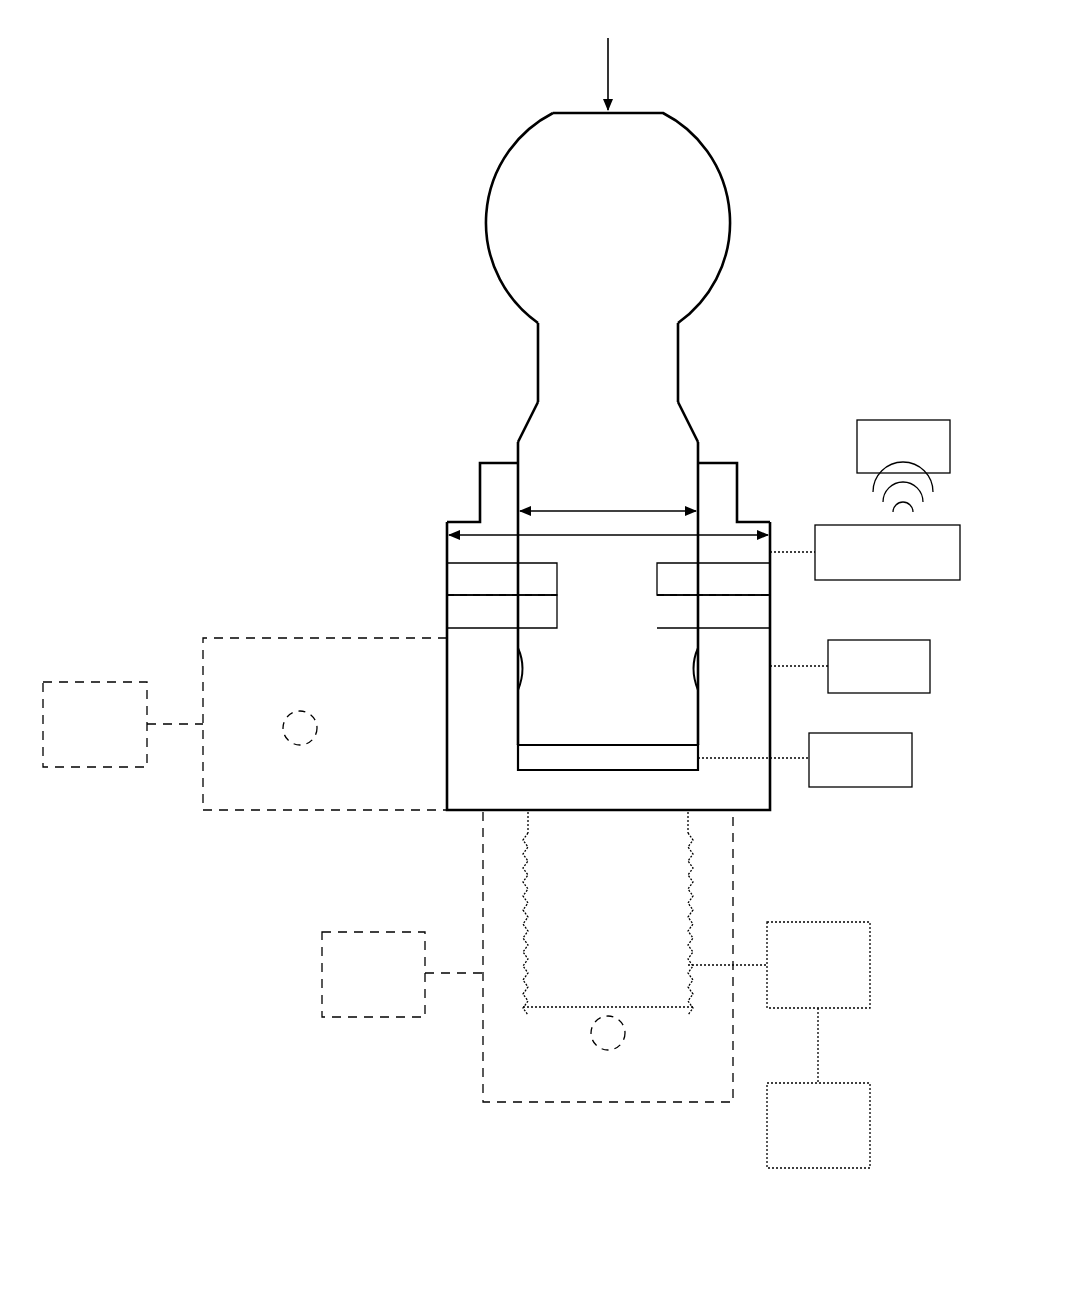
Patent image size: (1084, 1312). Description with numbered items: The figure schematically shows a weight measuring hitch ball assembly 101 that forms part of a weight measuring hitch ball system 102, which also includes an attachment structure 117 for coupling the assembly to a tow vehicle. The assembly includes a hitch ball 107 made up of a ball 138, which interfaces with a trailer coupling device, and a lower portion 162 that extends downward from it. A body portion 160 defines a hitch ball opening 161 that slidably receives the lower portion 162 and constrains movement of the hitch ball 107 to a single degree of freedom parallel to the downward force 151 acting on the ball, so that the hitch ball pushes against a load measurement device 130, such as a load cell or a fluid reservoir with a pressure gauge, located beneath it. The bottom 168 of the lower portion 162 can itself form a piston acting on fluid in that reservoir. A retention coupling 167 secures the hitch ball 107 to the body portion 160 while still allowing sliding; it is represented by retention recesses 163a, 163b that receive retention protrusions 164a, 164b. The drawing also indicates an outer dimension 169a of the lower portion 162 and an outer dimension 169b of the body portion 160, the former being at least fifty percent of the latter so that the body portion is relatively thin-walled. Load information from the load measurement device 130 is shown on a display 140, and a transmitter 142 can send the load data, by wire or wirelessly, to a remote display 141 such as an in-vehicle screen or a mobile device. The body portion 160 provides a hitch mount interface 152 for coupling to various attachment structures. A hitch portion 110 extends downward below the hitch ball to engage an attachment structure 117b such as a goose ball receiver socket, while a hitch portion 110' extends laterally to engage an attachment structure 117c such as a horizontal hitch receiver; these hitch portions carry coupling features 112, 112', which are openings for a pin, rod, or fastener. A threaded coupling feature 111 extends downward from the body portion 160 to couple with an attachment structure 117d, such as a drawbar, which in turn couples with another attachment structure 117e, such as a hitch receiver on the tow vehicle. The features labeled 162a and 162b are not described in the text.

The weight measuring hitch ball assembly 101 is at (763, 110).
The weight measuring hitch ball system 102 is at (368, 45).
The hitch ball 107 is at (458, 172).
The ball 138 is at (487, 218).
The downward force 151 is at (609, 68).
The lower portion 162 is at (505, 422).
The body portion 160 is at (752, 446).
The hitch ball opening 161 is at (706, 452).
The collar 162a is at (757, 472).
The housing lower edge 162b is at (788, 814).
The retention coupling 167 is at (420, 563).
The hitch mount interface 152 is at (400, 507).
The bottom 168 is at (503, 717).
The outer dimension of the lower portion 169a is at (557, 505).
The outer dimension of the body portion 169b is at (508, 533).
The retention recess 163a is at (480, 592).
The retention recess 163b is at (690, 592).
The retention protrusion 164a is at (480, 625).
The retention protrusion 164b is at (690, 625).
The load measurement device 130 is at (594, 768).
The attachment structure 117 is at (862, 678).
The attachment structure 117b is at (350, 984).
The attachment structure 117c is at (72, 733).
The attachment structure 117d is at (795, 975).
The attachment structure 117e is at (795, 1135).
The display 140 is at (860, 790).
The remote display 141 is at (900, 420).
The transmitter 142 is at (892, 582).
The hitch portion 110 is at (595, 985).
The hitch portion 110' is at (325, 716).
The coupling feature 111 is at (688, 887).
The coupling feature 112 is at (609, 1087).
The coupling feature 112' is at (300, 790).